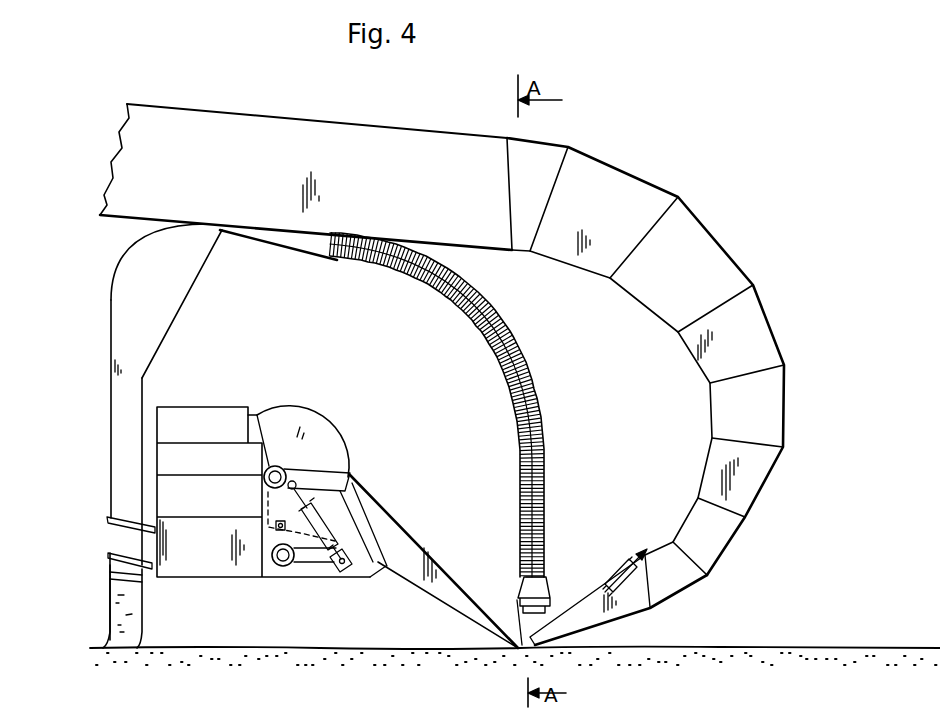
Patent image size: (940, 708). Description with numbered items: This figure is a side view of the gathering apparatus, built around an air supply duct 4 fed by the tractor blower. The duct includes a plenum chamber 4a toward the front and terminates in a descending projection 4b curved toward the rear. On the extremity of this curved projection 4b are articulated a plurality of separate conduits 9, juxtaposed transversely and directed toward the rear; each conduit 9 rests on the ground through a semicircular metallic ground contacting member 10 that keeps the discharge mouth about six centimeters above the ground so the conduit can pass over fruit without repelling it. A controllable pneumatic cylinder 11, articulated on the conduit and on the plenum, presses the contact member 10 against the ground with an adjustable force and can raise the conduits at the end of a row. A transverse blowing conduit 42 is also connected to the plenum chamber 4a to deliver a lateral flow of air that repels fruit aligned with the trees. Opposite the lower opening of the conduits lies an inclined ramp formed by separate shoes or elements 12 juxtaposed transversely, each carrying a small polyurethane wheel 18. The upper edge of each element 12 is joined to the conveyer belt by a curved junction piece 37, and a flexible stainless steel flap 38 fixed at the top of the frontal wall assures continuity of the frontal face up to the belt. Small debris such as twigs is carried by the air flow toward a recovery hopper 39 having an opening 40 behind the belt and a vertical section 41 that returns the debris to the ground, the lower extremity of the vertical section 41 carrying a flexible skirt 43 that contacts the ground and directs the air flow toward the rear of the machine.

The air supply duct 4 is at (471, 319).
The plenum chamber 4a is at (235, 138).
The descending projection 4b is at (763, 328).
The conduit 9 is at (563, 613).
The ground contacting member 10 is at (553, 645).
The pneumatic cylinder 11 is at (618, 568).
The element 12 is at (403, 547).
The polyurethane wheel 18 is at (517, 598).
The junction piece 37 is at (318, 432).
The flexible flap 38 is at (351, 474).
The recovery hopper 39 is at (101, 330).
The opening 40 is at (204, 246).
The vertical section 41 is at (113, 300).
The blowing conduit 42 is at (526, 396).
The flexible skirt 43 is at (140, 618).